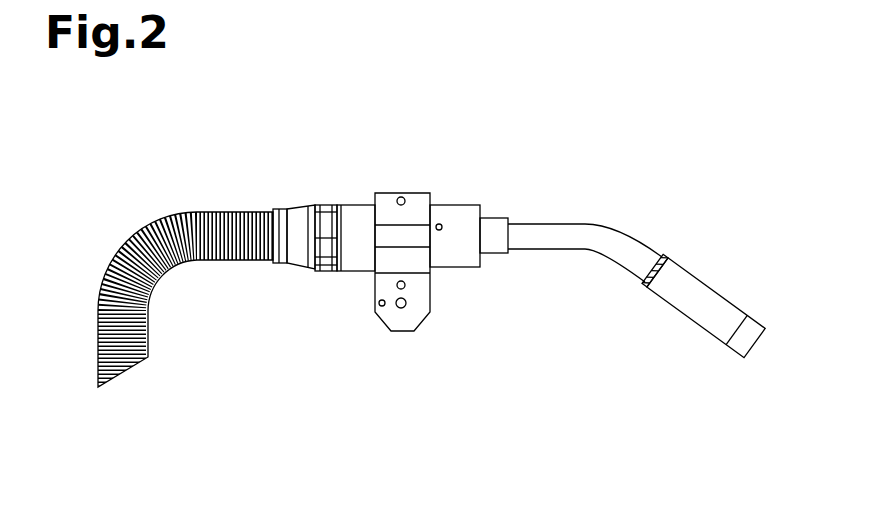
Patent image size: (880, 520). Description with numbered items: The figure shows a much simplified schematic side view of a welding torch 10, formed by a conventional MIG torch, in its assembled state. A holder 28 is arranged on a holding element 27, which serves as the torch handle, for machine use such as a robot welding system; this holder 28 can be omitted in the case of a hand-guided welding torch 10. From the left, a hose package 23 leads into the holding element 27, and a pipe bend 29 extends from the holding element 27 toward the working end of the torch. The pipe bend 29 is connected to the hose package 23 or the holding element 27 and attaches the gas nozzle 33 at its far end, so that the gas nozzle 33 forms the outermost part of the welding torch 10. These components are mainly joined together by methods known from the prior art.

The welding torch 10 is at (638, 142).
The hose package 23 is at (150, 226).
The holding element 27 is at (458, 217).
The holder 28 is at (398, 323).
The pipe bend 29 is at (567, 240).
The gas nozzle 33 is at (697, 312).